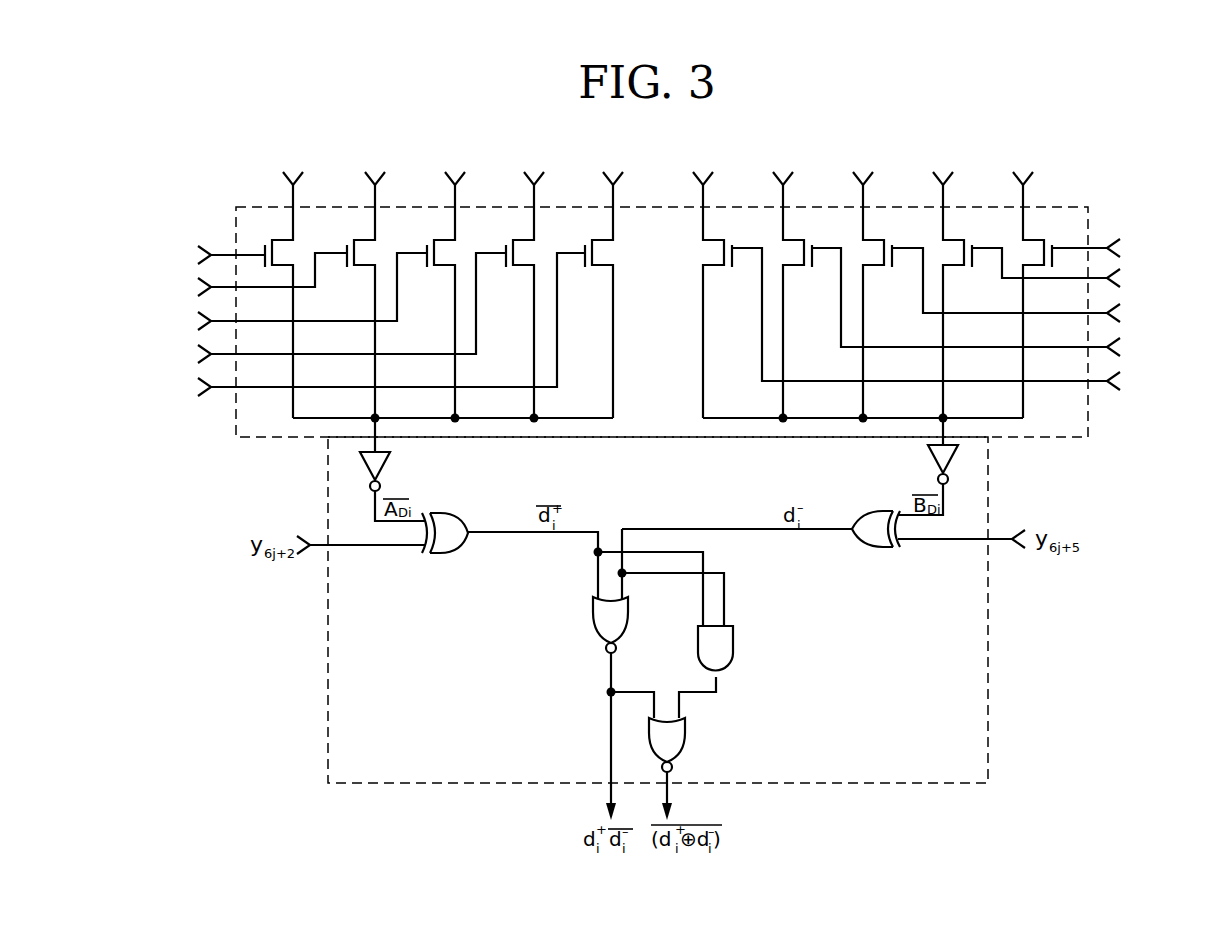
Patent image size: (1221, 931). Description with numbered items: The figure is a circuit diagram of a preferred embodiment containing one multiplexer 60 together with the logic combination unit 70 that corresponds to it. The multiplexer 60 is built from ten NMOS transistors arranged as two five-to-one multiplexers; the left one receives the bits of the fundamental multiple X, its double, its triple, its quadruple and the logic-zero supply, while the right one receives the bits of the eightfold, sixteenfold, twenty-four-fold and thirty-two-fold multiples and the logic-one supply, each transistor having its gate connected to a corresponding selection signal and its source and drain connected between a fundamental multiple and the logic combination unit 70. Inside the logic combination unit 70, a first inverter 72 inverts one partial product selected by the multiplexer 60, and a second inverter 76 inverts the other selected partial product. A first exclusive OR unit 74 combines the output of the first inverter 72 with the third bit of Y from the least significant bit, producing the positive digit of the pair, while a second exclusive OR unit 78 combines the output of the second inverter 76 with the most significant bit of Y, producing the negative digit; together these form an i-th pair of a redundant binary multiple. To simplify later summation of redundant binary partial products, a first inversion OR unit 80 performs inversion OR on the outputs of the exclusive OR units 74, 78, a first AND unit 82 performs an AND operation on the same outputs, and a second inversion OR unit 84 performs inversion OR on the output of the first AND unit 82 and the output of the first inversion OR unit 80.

The multiplexer 60 is at (1060, 207).
The logic combination unit 70 is at (988, 672).
The first inverter 72 is at (388, 469).
The first exclusive OR unit 74 is at (456, 513).
The second inverter 76 is at (928, 462).
The second exclusive OR unit 78 is at (870, 511).
The first inversion OR unit 80 is at (593, 611).
The first AND unit 82 is at (733, 660).
The second inversion OR unit 84 is at (685, 739).